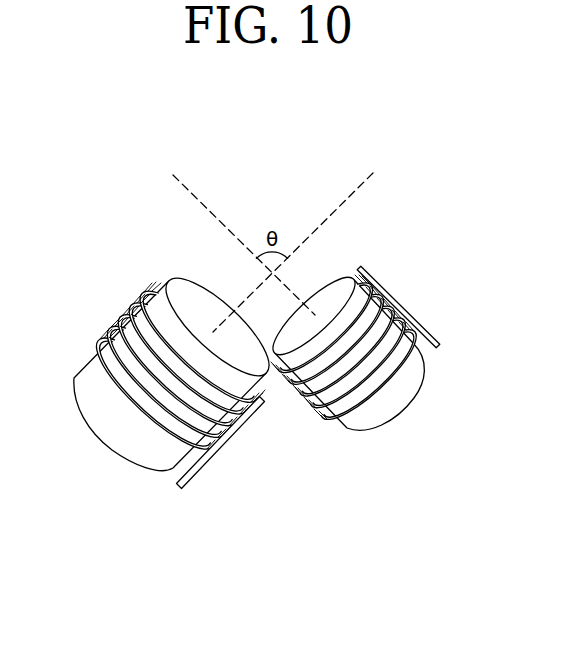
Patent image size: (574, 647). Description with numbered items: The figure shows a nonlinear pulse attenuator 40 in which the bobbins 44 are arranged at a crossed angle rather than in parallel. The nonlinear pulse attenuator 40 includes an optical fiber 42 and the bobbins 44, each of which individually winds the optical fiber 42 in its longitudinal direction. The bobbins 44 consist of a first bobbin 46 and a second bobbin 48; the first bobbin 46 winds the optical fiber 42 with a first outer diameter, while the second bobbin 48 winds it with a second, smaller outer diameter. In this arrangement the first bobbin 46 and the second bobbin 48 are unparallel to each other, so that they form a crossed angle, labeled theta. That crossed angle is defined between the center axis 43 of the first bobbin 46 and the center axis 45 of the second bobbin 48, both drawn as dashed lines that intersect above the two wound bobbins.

The nonlinear pulse attenuator 40 is at (263, 448).
The optical fiber 42 is at (440, 350).
The center axis of the first bobbin 43 is at (342, 198).
The bobbin 44 is at (249, 427).
The center axis of the second bobbin 45 is at (198, 200).
The first bobbin 46 is at (148, 457).
The second bobbin 48 is at (344, 405).